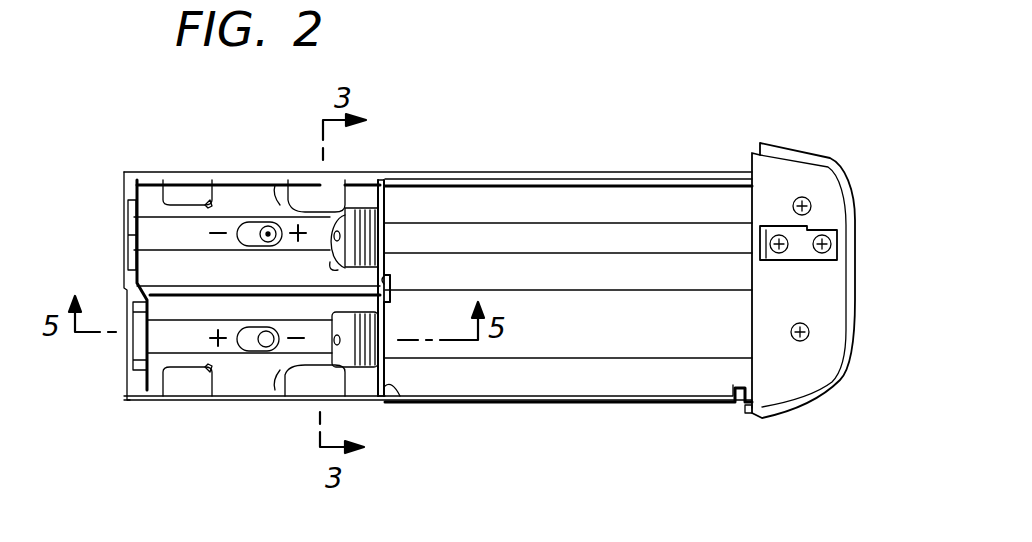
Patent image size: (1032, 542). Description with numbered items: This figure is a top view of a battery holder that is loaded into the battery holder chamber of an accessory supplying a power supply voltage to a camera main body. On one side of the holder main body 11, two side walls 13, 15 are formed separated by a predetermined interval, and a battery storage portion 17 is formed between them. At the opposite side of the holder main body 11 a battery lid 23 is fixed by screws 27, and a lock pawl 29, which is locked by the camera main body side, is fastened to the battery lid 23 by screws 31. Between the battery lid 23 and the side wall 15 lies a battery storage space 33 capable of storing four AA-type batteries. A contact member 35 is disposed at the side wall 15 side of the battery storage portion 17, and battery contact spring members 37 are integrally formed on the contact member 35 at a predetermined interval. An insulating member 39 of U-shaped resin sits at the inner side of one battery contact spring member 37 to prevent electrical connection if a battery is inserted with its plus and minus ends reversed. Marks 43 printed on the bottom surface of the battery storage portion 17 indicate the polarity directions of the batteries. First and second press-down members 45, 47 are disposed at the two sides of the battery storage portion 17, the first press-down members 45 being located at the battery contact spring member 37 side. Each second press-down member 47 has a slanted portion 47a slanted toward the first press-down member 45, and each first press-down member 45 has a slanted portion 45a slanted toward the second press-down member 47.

The holder main body 11 is at (508, 404).
The side wall 13 is at (122, 386).
The side wall 15 is at (400, 384).
The battery storage portion 17 is at (160, 262).
The battery lid 23 is at (768, 170).
The screw 27 is at (803, 198).
The lock pawl 29 is at (805, 252).
The screws 31 is at (778, 242).
The battery storage space 33 is at (603, 332).
The contact member 35 is at (390, 283).
The battery contact spring members 37 is at (386, 215).
The insulating member 39 is at (365, 230).
The marks 43 is at (245, 230).
The first press-down member 45 is at (318, 190).
The slanted portion 45a is at (300, 198).
The second press-down member 47 is at (185, 195).
The slanted portion 47a is at (208, 192).